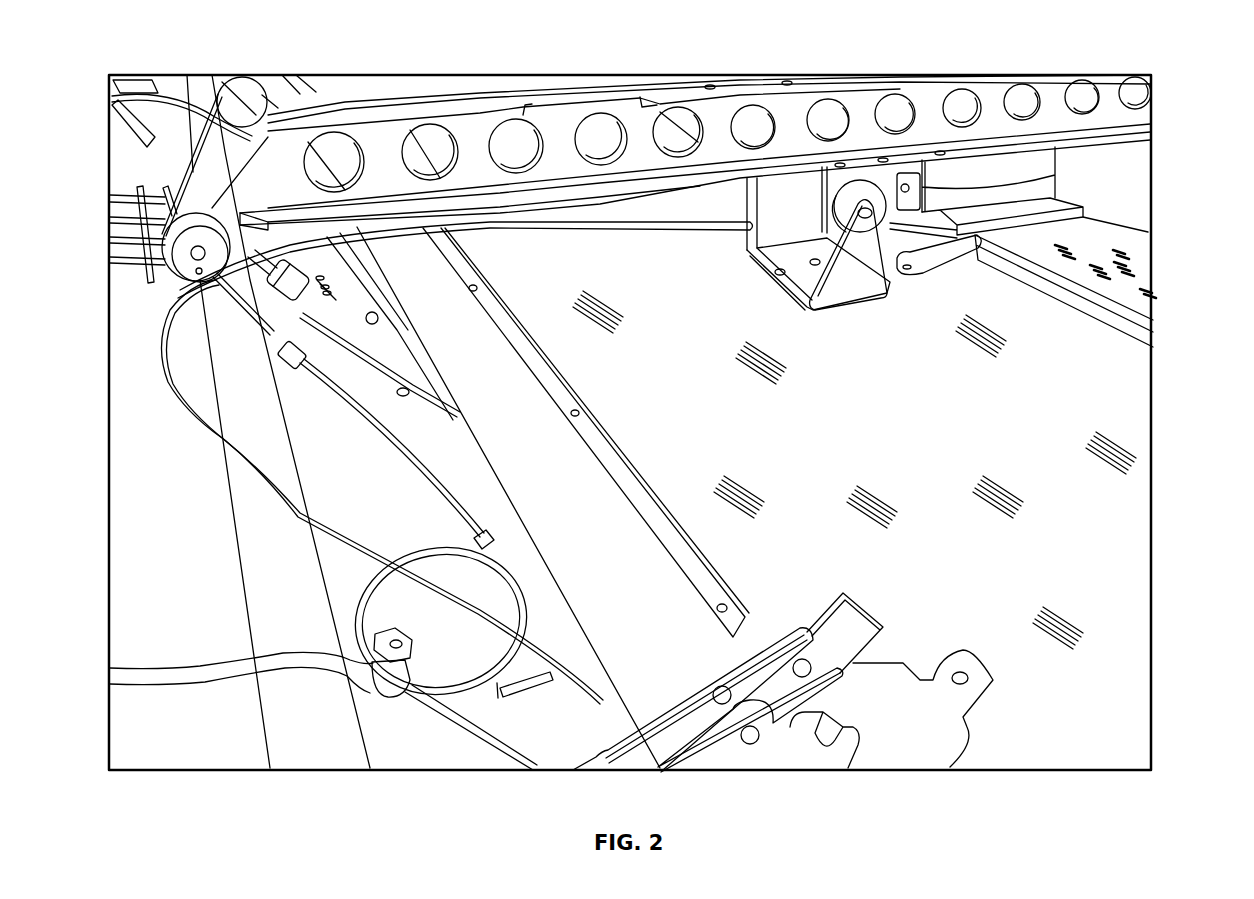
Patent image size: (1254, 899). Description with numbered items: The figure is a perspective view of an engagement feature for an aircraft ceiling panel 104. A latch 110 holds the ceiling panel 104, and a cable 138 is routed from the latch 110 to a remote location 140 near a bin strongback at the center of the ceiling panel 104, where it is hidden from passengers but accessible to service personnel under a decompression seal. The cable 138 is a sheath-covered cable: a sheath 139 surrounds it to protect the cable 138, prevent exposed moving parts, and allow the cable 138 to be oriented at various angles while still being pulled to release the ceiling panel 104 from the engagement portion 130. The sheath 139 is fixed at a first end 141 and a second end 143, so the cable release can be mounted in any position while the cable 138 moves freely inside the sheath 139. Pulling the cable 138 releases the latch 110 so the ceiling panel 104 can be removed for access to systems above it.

The ceiling panel 104 is at (1120, 692).
The latch 110 is at (823, 175).
The engagement portion 130 is at (762, 197).
The cable 138 is at (331, 526).
The sheath 139 is at (163, 345).
The remote location 140 is at (483, 643).
The first end 141 is at (748, 233).
The second end 143 is at (478, 608).